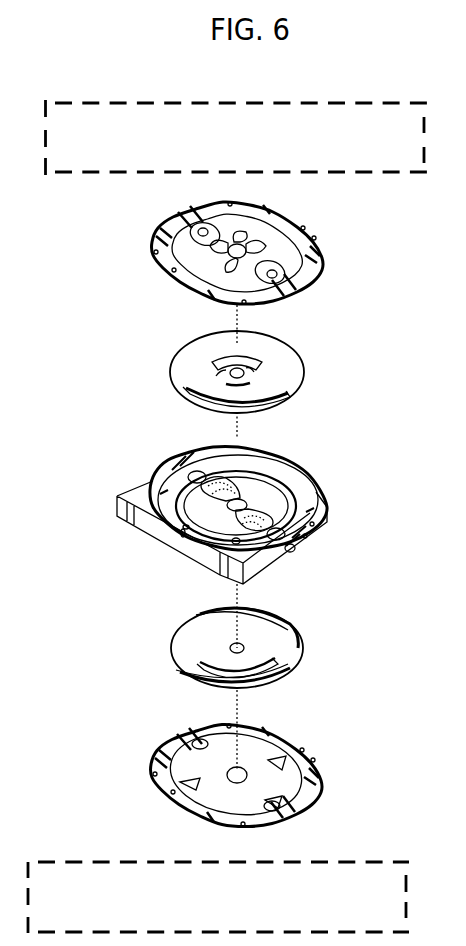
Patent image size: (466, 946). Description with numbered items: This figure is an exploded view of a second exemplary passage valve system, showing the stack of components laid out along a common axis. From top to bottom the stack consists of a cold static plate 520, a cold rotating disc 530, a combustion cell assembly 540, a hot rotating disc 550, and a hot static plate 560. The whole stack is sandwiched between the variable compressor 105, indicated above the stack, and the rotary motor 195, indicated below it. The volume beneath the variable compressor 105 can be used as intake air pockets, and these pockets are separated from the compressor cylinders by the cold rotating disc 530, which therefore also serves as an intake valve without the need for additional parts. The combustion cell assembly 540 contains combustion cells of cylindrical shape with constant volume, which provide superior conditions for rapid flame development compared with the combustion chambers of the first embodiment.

The variable compressor 105 is at (257, 152).
The rotary motor 195 is at (239, 912).
The cold static plate 520 is at (324, 270).
The cold rotating disc 530 is at (302, 374).
The combustion cell assembly 540 is at (330, 515).
The hot rotating disc 550 is at (302, 653).
The hot static plate 560 is at (324, 790).